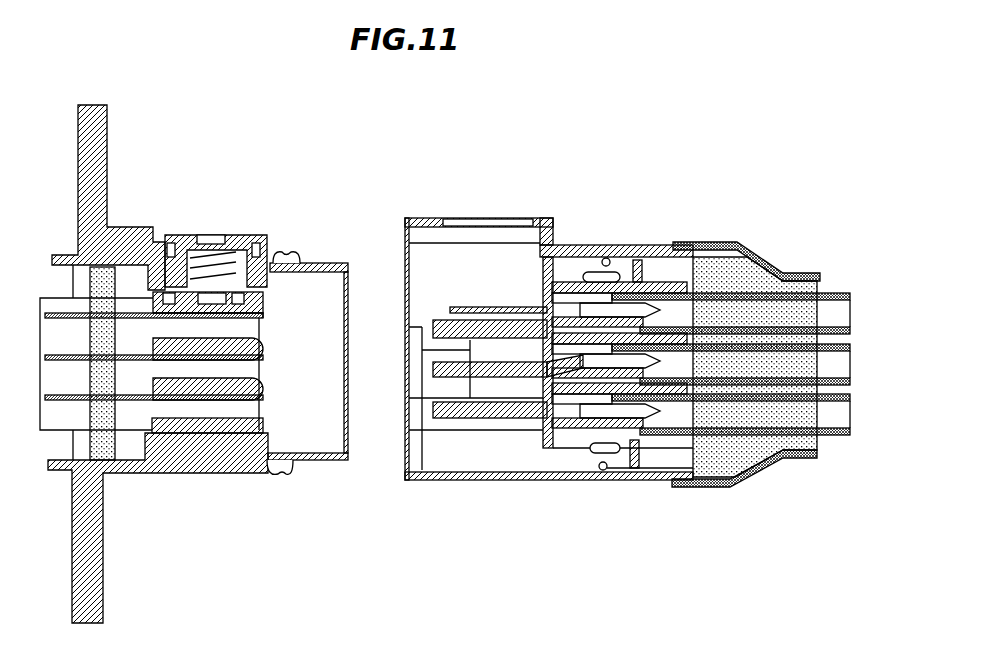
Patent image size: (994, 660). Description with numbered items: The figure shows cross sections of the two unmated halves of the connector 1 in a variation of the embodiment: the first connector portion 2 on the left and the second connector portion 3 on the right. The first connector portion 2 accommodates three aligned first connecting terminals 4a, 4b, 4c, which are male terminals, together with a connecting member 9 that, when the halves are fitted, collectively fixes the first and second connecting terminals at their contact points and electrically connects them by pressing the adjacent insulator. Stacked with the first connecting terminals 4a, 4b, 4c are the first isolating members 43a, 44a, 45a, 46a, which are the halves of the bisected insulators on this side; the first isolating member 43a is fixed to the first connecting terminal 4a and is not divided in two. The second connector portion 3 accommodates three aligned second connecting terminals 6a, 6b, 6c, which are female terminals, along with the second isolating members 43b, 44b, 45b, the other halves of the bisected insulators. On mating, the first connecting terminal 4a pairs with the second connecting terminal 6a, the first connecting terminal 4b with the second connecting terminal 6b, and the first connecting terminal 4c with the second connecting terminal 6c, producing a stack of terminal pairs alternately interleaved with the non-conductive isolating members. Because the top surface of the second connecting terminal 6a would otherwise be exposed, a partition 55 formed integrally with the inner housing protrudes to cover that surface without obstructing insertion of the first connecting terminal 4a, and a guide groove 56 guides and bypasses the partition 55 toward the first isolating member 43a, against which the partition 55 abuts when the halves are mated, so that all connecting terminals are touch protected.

The connector 1 is at (350, 115).
The first connector portion 2 is at (133, 220).
The second connector portion 3 is at (660, 238).
The first connecting terminal 4a is at (80, 312).
The first connecting terminal 4b is at (78, 354).
The first connecting terminal 4c is at (78, 394).
The connecting member 9 is at (234, 236).
The first isolating member 43a is at (265, 305).
The first isolating member 44a is at (265, 350).
The first isolating member 45a is at (265, 390).
The first isolating member 46a is at (265, 425).
The guide groove 56 is at (265, 316).
The partition 55 is at (468, 307).
The second connecting terminal 6a is at (530, 318).
The second connecting terminal 6b is at (530, 362).
The second connecting terminal 6c is at (530, 402).
The second isolating member 43b is at (433, 333).
The second isolating member 44b is at (433, 372).
The second isolating member 45b is at (433, 410).